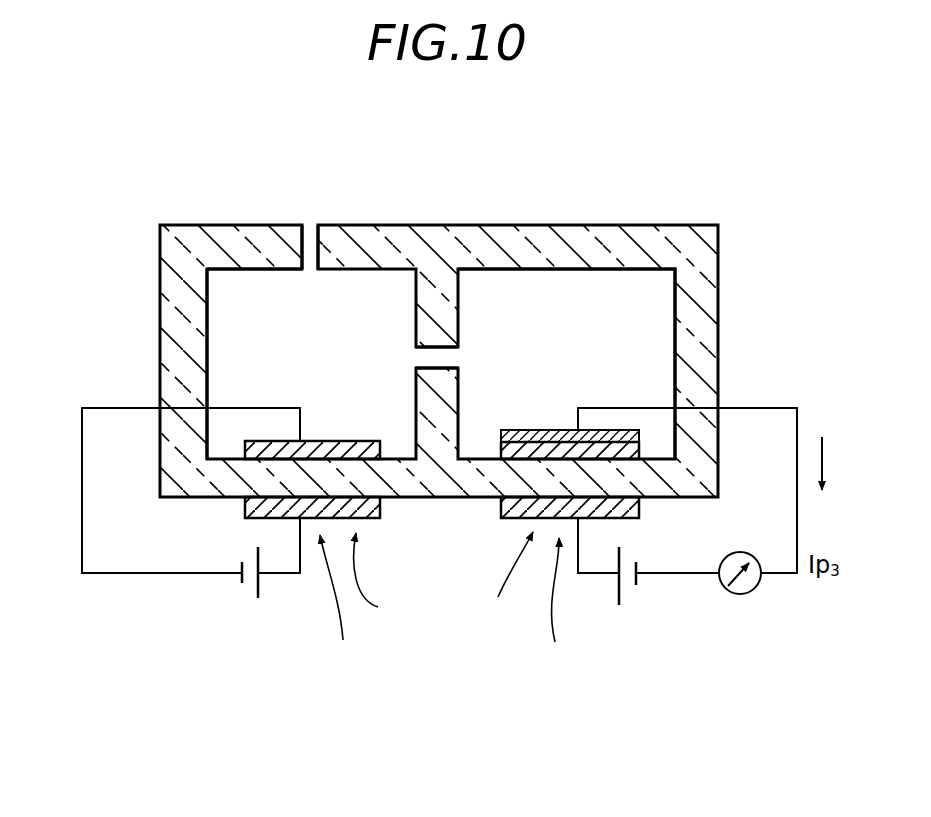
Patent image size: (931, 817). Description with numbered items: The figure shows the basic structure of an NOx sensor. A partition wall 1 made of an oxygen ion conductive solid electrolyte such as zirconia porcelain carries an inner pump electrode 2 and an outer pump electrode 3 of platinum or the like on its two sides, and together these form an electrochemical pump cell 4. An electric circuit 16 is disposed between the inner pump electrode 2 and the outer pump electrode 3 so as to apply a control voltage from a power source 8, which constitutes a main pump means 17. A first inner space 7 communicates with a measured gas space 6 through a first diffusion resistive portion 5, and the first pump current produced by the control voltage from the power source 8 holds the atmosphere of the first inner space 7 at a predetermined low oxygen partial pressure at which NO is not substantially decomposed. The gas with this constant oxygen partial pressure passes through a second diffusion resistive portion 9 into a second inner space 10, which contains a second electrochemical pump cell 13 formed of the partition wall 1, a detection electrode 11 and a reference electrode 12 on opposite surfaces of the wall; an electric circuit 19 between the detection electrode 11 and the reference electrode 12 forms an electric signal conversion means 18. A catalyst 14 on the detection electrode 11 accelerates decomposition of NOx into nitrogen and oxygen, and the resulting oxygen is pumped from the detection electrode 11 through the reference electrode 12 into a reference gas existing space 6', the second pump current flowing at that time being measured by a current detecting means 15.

The partition wall 1 is at (578, 243).
The inner pump electrode 2 is at (330, 441).
The outer pump electrode 3 is at (380, 510).
The electrochemical pump cell 4 is at (377, 581).
The first diffusion resistive portion 5 is at (307, 237).
The measured gas space 6 is at (347, 152).
The reference gas existing space 6' is at (680, 529).
The first inner space 7 is at (255, 328).
The power source 8 is at (232, 592).
The second diffusion resistive portion 9 is at (447, 356).
The second inner space 10 is at (637, 332).
The detection electrode 11 is at (501, 452).
The reference electrode 12 is at (500, 513).
The electrochemical pump cell 13 is at (505, 581).
The catalyst 14 is at (645, 425).
The current detecting means 15 is at (725, 592).
The electric circuit 16 is at (78, 512).
The main pump means 17 is at (340, 605).
The electric signal conversion means 18 is at (554, 608).
The electric circuit 19 is at (688, 580).